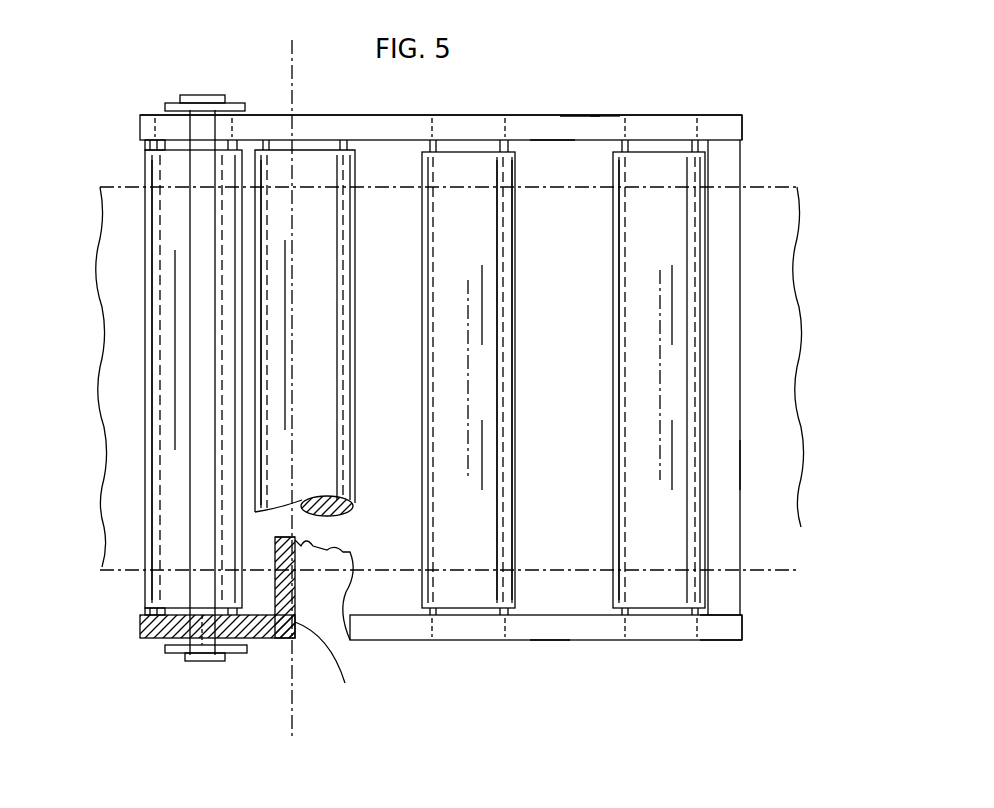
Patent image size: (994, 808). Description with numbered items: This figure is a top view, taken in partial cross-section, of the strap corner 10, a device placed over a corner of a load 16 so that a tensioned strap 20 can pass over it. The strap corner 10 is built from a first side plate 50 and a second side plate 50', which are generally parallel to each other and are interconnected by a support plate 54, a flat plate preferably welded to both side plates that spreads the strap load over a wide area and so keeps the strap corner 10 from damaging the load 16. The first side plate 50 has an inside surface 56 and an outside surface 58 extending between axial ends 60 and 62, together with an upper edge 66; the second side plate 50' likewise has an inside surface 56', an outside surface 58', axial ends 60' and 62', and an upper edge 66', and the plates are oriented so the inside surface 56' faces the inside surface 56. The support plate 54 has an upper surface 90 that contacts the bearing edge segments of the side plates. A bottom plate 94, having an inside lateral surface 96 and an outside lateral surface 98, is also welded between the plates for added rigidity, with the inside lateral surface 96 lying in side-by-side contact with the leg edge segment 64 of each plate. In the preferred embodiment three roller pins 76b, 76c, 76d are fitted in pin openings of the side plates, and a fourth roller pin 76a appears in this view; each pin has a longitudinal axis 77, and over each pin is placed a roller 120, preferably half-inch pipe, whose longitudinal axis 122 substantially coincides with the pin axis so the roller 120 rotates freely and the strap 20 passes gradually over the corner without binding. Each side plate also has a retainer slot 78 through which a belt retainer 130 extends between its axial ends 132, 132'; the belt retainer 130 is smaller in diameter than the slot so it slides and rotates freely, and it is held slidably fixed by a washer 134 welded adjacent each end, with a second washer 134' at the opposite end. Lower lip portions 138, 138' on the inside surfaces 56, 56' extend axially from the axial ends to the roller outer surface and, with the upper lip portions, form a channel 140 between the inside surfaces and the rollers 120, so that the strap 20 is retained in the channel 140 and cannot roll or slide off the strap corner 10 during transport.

The strap corner 10 is at (609, 87).
The load 16 is at (288, 727).
The strap 20 is at (797, 285).
The first side plate 50 is at (565, 676).
The second side plate 50' is at (570, 85).
The support plate 54 is at (744, 466).
The inside surface 56 is at (764, 596).
The inside surface 56' is at (552, 192).
The outside surface 58 is at (761, 655).
The outside surface 58' is at (441, 107).
The axial end 60 is at (166, 650).
The axial end 60' is at (190, 100).
The axial end 62 is at (771, 627).
The axial end 62' is at (791, 105).
The leg edge segment 64 is at (328, 669).
The upper edge 66 is at (546, 676).
The upper edge 66' is at (562, 81).
The roller 76a is at (660, 612).
The roller pin 76b is at (455, 612).
The roller pin 76c is at (305, 148).
The roller pin 76d is at (180, 140).
The longitudinal axis 77 is at (660, 460).
The retainer slot 78 is at (207, 655).
The upper surface 90 is at (726, 365).
The bottom plate 94 is at (300, 591).
The inside lateral surface 96 is at (275, 555).
The outside lateral surface 98 is at (300, 555).
The roller 120 is at (615, 357).
The longitudinal axis 122 is at (666, 377).
The belt retainer 130 is at (195, 375).
The axial end 132 is at (186, 705).
The axial end 132' is at (184, 61).
The washer 134 is at (173, 685).
The washer 134' is at (142, 78).
The lower lip portion 138 is at (92, 589).
The lower lip portion 138' is at (92, 155).
The channel 140 is at (718, 165).